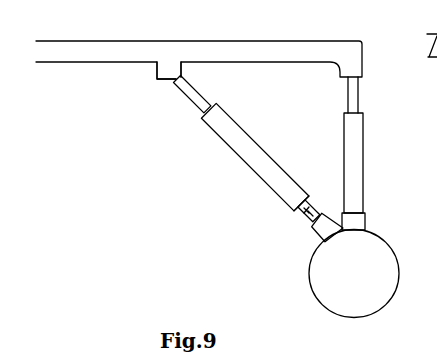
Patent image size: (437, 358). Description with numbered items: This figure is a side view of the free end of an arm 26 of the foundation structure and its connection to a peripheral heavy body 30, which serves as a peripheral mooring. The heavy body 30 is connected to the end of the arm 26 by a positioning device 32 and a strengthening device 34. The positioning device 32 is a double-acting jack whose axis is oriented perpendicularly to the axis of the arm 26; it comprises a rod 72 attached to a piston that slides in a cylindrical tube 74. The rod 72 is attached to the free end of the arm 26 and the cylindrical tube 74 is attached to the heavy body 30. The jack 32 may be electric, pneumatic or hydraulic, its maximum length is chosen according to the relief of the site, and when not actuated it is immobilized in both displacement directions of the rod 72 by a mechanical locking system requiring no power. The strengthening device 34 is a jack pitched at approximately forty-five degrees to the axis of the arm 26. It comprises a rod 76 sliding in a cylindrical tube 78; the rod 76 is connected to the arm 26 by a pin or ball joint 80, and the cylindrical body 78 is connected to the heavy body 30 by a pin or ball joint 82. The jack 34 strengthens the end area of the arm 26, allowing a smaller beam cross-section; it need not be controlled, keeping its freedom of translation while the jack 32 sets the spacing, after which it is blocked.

The arm 26 is at (256, 47).
The pin or ball joint 80 is at (157, 73).
The rod 76 is at (190, 99).
The strengthening device 34 is at (258, 171).
The cylindrical tube 78 is at (280, 194).
The pin or ball joint 82 is at (304, 222).
The rod 72 is at (358, 95).
The positioning device 32 is at (365, 151).
The cylindrical tube 74 is at (353, 183).
The peripheral heavy body 30 is at (386, 291).